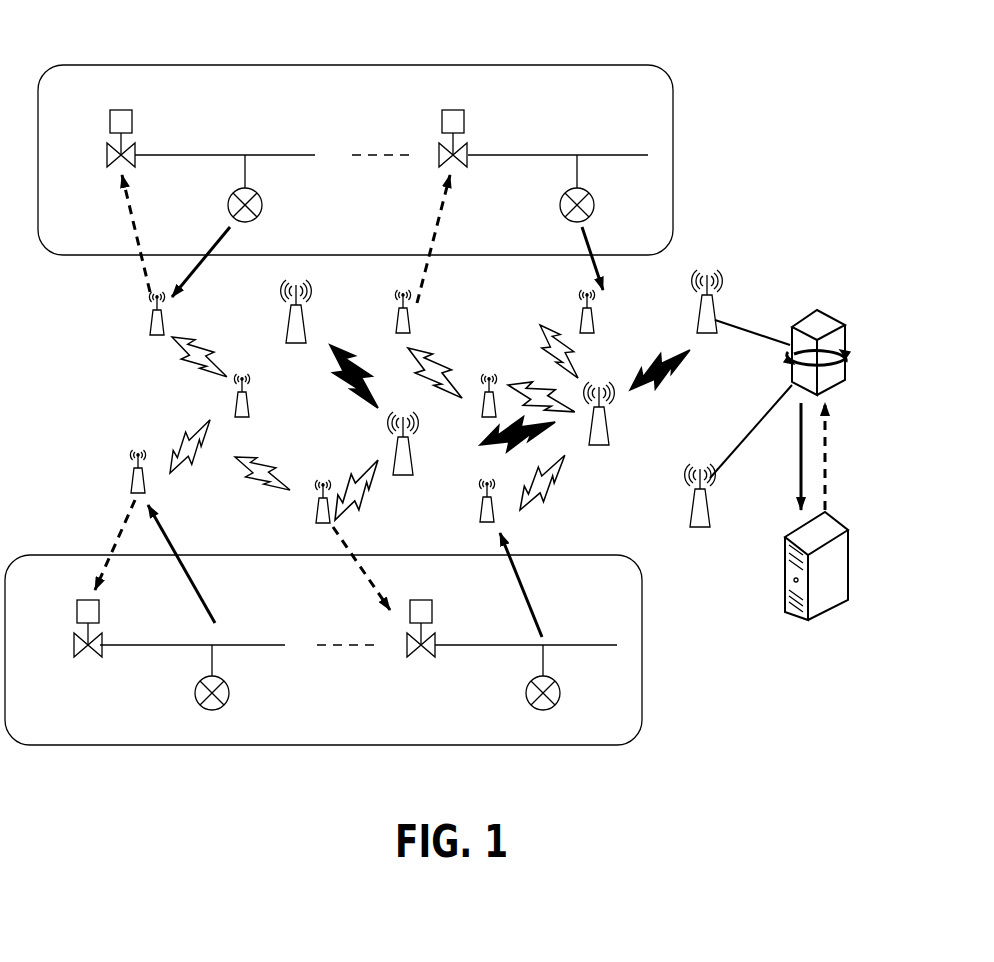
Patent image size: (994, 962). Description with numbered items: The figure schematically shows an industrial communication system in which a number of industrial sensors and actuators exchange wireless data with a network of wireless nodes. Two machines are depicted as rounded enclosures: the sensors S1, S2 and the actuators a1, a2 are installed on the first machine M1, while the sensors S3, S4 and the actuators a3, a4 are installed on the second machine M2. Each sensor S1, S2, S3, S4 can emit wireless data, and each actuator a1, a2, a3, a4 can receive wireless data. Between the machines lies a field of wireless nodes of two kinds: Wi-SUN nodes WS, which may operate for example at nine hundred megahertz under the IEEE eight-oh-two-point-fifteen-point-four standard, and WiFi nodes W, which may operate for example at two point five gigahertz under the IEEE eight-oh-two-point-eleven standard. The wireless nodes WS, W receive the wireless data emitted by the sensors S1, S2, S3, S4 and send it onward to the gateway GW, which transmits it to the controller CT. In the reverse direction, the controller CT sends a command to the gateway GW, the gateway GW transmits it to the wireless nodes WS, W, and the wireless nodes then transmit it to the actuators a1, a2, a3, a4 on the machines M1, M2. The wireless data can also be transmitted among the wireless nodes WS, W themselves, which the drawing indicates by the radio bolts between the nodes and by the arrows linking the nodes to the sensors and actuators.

The machine M1 is at (585, 65).
The machine M2 is at (585, 745).
The actuator a1 is at (118, 108).
The actuator a2 is at (455, 108).
The actuator a3 is at (86, 650).
The actuator a4 is at (419, 650).
The sensor S1 is at (262, 210).
The sensor S2 is at (560, 212).
The sensor S3 is at (230, 700).
The sensor S4 is at (527, 700).
The Wi-SUN wireless node WS is at (150, 322).
The WiFi wireless node W is at (286, 325).
The gateway GW is at (822, 322).
The controller CT is at (830, 608).